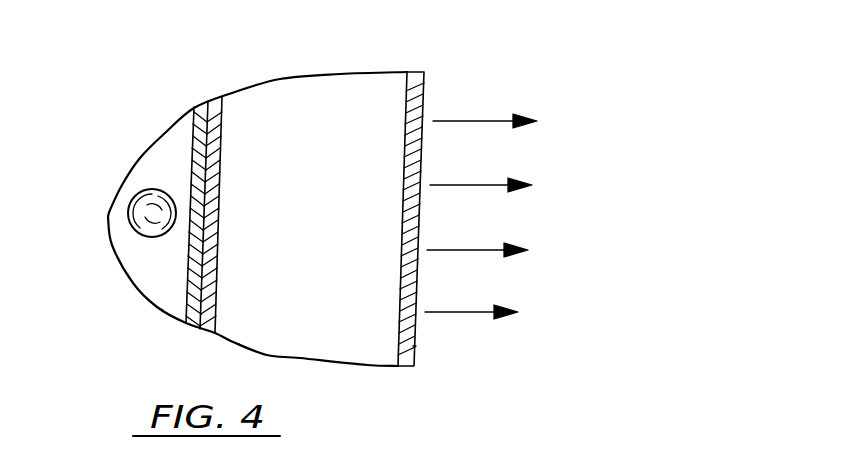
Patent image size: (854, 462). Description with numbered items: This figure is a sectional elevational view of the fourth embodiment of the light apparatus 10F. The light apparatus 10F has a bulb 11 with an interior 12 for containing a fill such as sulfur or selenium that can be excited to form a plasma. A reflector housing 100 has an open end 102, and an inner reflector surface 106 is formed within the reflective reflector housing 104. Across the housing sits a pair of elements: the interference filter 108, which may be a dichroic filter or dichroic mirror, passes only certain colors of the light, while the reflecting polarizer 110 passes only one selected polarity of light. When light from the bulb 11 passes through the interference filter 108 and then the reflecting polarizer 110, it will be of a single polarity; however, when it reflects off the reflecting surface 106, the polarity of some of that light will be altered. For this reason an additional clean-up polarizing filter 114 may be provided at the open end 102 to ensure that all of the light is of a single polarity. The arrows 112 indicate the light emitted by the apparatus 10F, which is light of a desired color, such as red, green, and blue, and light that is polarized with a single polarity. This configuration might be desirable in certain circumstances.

The reflector housing 100 is at (257, 83).
The light apparatus 10F is at (349, 71).
The interference filter 108 is at (194, 106).
The reflecting polarizer 110 is at (242, 53).
The open end 102 is at (383, 114).
The arrows 112 is at (481, 122).
The polarizing filter 114 is at (413, 346).
The inner reflector surface 106 is at (238, 339).
The reflective reflector housing 104 is at (158, 307).
The interior 12 is at (147, 212).
The bulb 11 is at (147, 235).